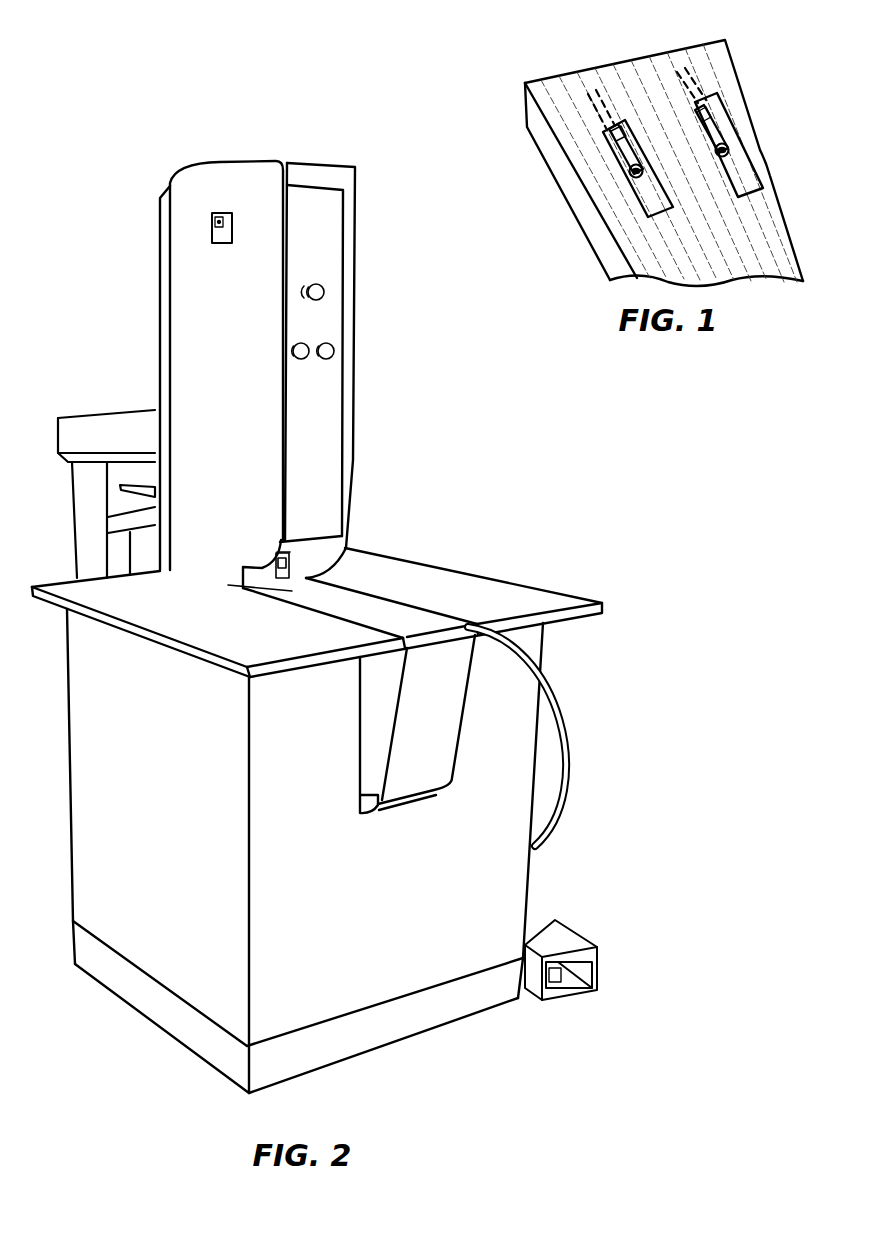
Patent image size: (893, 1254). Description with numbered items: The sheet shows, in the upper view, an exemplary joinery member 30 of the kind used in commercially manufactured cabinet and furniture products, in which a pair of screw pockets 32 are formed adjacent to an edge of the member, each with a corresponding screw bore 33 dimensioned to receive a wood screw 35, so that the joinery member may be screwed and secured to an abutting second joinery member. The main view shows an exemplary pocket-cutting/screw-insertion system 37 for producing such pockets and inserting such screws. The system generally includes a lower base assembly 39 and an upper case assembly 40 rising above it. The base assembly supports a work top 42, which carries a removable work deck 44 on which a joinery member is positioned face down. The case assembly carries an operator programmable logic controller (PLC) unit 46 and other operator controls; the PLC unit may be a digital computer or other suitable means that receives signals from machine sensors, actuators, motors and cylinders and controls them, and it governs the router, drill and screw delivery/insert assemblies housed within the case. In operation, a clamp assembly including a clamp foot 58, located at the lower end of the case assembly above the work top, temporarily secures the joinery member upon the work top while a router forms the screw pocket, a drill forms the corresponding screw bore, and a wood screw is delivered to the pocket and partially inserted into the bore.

In FIG. 1, the joinery member 30 is at (555, 107).
In FIG. 1, the screw pocket 32 is at (645, 190).
In FIG. 1, the screw bore 33 is at (611, 124).
In FIG. 1, the wood screw 35 is at (625, 153).
In FIG. 2, the pocket-cutting/screw-insertion system 37 is at (104, 188).
In FIG. 2, the lower base assembly 39 is at (542, 860).
In FIG. 2, the upper case assembly 40 is at (283, 365).
In FIG. 2, the work top 42 is at (317, 596).
In FIG. 2, the removable work deck 44 is at (373, 607).
In FIG. 2, the operator programmable logic controller (PLC) unit 46 is at (212, 217).
In FIG. 2, the clamp foot 58 is at (307, 577).